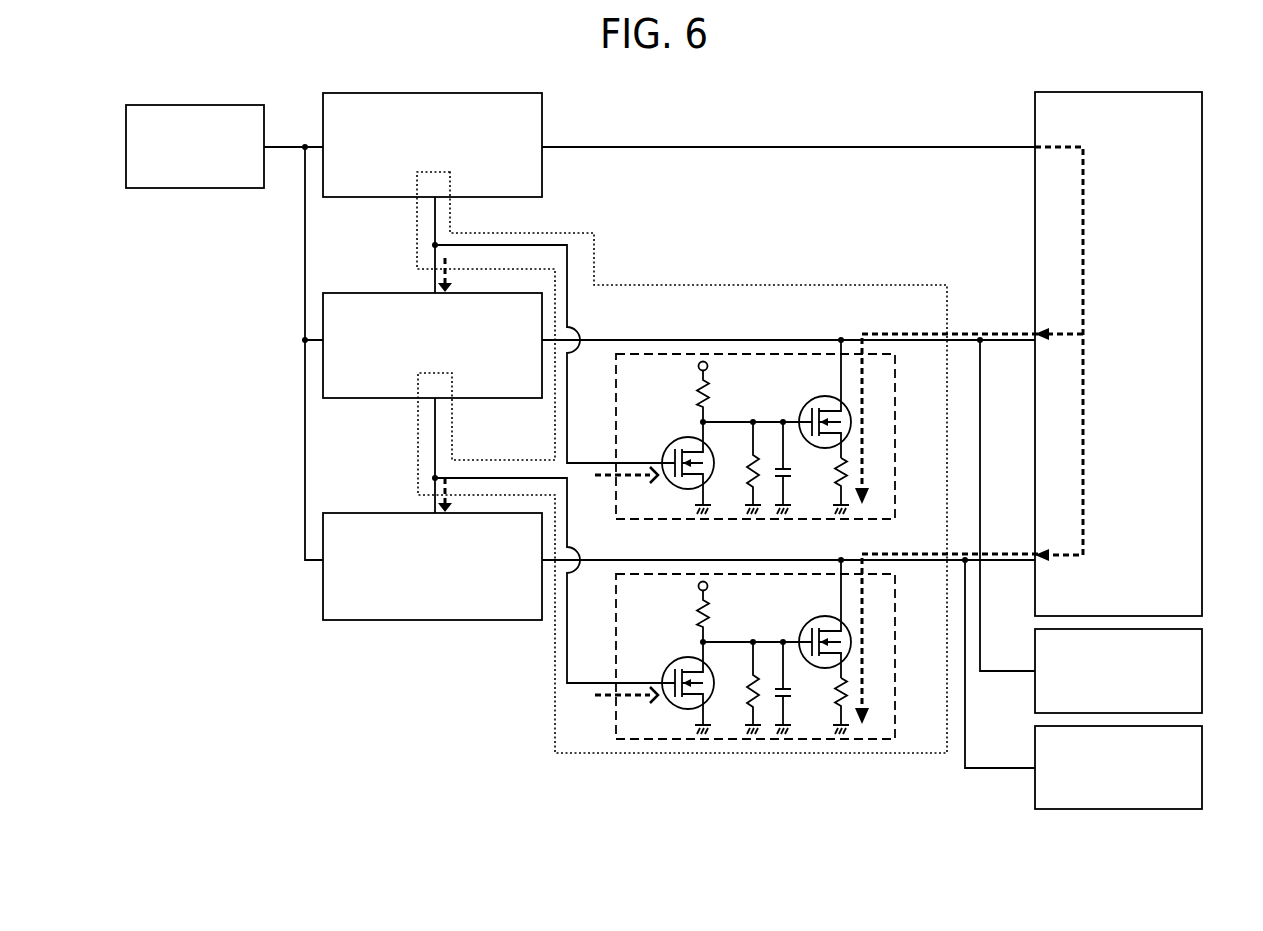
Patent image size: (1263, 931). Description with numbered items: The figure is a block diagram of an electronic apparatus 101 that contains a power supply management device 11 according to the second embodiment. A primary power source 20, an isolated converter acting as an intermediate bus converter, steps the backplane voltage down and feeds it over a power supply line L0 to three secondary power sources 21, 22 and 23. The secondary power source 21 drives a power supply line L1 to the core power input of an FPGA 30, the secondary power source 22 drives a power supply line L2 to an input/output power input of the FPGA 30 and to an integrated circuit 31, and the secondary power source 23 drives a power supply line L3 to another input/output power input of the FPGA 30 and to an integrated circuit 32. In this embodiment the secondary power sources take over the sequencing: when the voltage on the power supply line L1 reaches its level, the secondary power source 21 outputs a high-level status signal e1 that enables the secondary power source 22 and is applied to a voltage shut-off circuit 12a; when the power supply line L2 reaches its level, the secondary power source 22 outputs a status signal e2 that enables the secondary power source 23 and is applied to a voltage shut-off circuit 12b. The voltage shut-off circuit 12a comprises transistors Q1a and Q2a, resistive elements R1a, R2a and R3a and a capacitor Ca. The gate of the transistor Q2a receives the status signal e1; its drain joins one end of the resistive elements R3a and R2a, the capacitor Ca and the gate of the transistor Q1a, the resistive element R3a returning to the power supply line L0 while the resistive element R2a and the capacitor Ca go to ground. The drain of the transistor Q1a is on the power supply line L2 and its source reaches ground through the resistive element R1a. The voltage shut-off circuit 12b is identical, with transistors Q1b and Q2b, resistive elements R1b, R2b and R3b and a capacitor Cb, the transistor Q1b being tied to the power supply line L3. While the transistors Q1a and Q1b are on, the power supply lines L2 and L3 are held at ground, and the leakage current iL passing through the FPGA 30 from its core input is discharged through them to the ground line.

The electronic apparatus 101 is at (920, 101).
The primary power source 20 is at (193, 103).
The secondary power source 21 is at (380, 93).
The secondary power source 22 is at (380, 293).
The secondary power source 23 is at (380, 513).
The power supply management device 11 is at (690, 285).
The voltage shut-off circuit 12a is at (895, 368).
The voltage shut-off circuit 12b is at (895, 588).
The FPGA 30 is at (1118, 92).
The integrated circuit 31 is at (1202, 668).
The integrated circuit 32 is at (1202, 768).
The power supply line L0 is at (279, 143).
The power supply line L1 is at (743, 147).
The power supply line L2 is at (743, 340).
The power supply line L3 is at (743, 560).
The status signal e1 is at (455, 276).
The status signal e2 is at (455, 496).
The transistor Q1a is at (808, 404).
The transistor Q2a is at (690, 437).
The resistive element R1a is at (837, 478).
The resistive element R2a is at (749, 464).
The resistive element R3a is at (695, 382).
The capacitor Ca is at (790, 468).
The transistor Q1b is at (808, 624).
The transistor Q2b is at (690, 657).
The resistive element R1b is at (837, 698).
The resistive element R2b is at (749, 684).
The resistive element R3b is at (695, 602).
The capacitor Cb is at (790, 688).
The leakage current iL is at (951, 419).